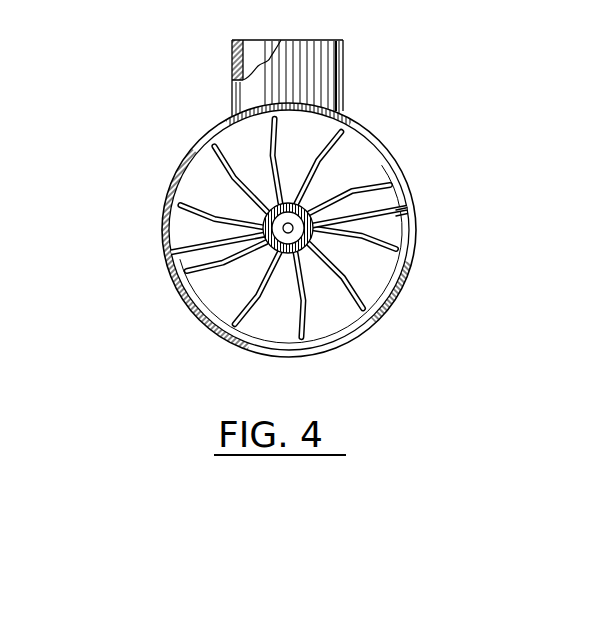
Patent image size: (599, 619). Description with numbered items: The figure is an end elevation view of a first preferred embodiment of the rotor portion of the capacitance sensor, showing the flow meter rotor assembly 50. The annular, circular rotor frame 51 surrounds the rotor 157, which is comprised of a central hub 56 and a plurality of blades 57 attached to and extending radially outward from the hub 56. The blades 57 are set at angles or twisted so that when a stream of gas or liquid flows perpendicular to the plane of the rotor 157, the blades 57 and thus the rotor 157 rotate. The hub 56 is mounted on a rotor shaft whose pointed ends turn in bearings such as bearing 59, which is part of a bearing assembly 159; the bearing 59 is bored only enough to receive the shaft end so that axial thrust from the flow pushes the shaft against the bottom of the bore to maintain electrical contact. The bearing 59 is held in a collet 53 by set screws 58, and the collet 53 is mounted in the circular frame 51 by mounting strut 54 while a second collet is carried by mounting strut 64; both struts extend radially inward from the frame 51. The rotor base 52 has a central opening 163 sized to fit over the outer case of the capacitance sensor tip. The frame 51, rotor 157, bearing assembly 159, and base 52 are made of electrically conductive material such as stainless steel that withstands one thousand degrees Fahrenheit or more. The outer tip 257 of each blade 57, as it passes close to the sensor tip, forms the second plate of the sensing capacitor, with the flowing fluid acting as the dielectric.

The flow meter rotor assembly 50 is at (200, 131).
The rotor frame 51 is at (367, 130).
The base 52 is at (343, 63).
The collet 53 is at (377, 148).
The mounting strut 54 is at (406, 205).
The central hub 56 is at (385, 250).
The blades 57 is at (355, 283).
The set screws 58 is at (299, 238).
The bearing 59 is at (212, 290).
The mounting strut 64 is at (192, 252).
The rotor 157 is at (212, 271).
The bearing assembly 159 is at (270, 213).
The central opening 163 is at (250, 48).
The outer tip 257 is at (377, 320).